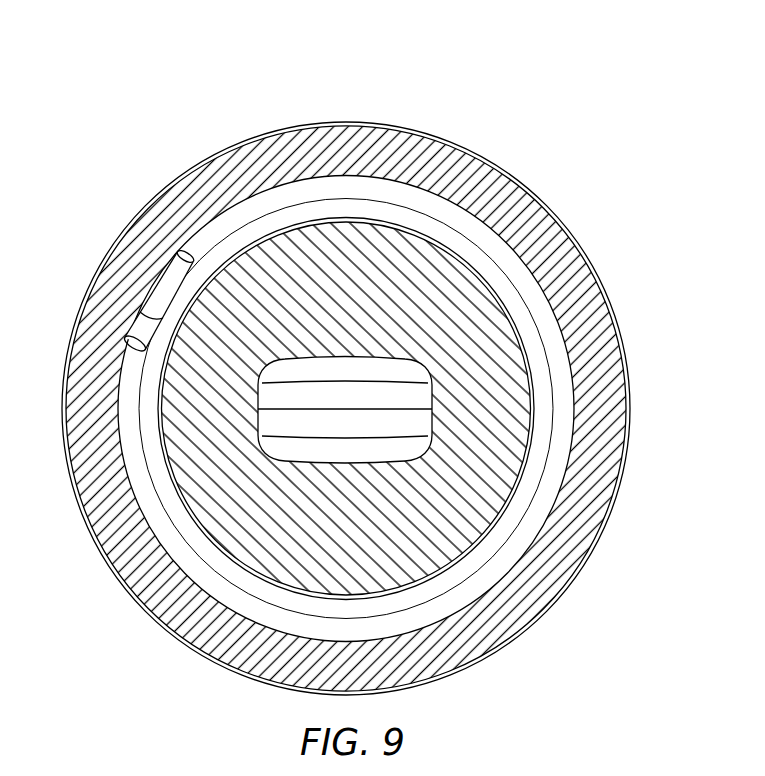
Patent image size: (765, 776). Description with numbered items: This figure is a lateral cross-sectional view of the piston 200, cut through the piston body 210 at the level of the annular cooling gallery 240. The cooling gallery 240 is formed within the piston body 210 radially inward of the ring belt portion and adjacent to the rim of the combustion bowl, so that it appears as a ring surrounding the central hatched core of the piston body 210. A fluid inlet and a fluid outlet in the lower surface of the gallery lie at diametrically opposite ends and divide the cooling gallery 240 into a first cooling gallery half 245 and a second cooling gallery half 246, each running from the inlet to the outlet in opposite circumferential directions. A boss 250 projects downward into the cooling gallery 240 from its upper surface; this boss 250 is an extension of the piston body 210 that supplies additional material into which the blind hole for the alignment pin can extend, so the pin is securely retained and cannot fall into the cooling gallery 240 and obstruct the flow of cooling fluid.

The assembly 200 is at (219, 70).
The piston body 210 is at (580, 530).
The annular cooling gallery 240 is at (508, 552).
The first cooling gallery half 245 is at (462, 228).
The second cooling gallery half 246 is at (156, 523).
The boss 250 is at (162, 302).